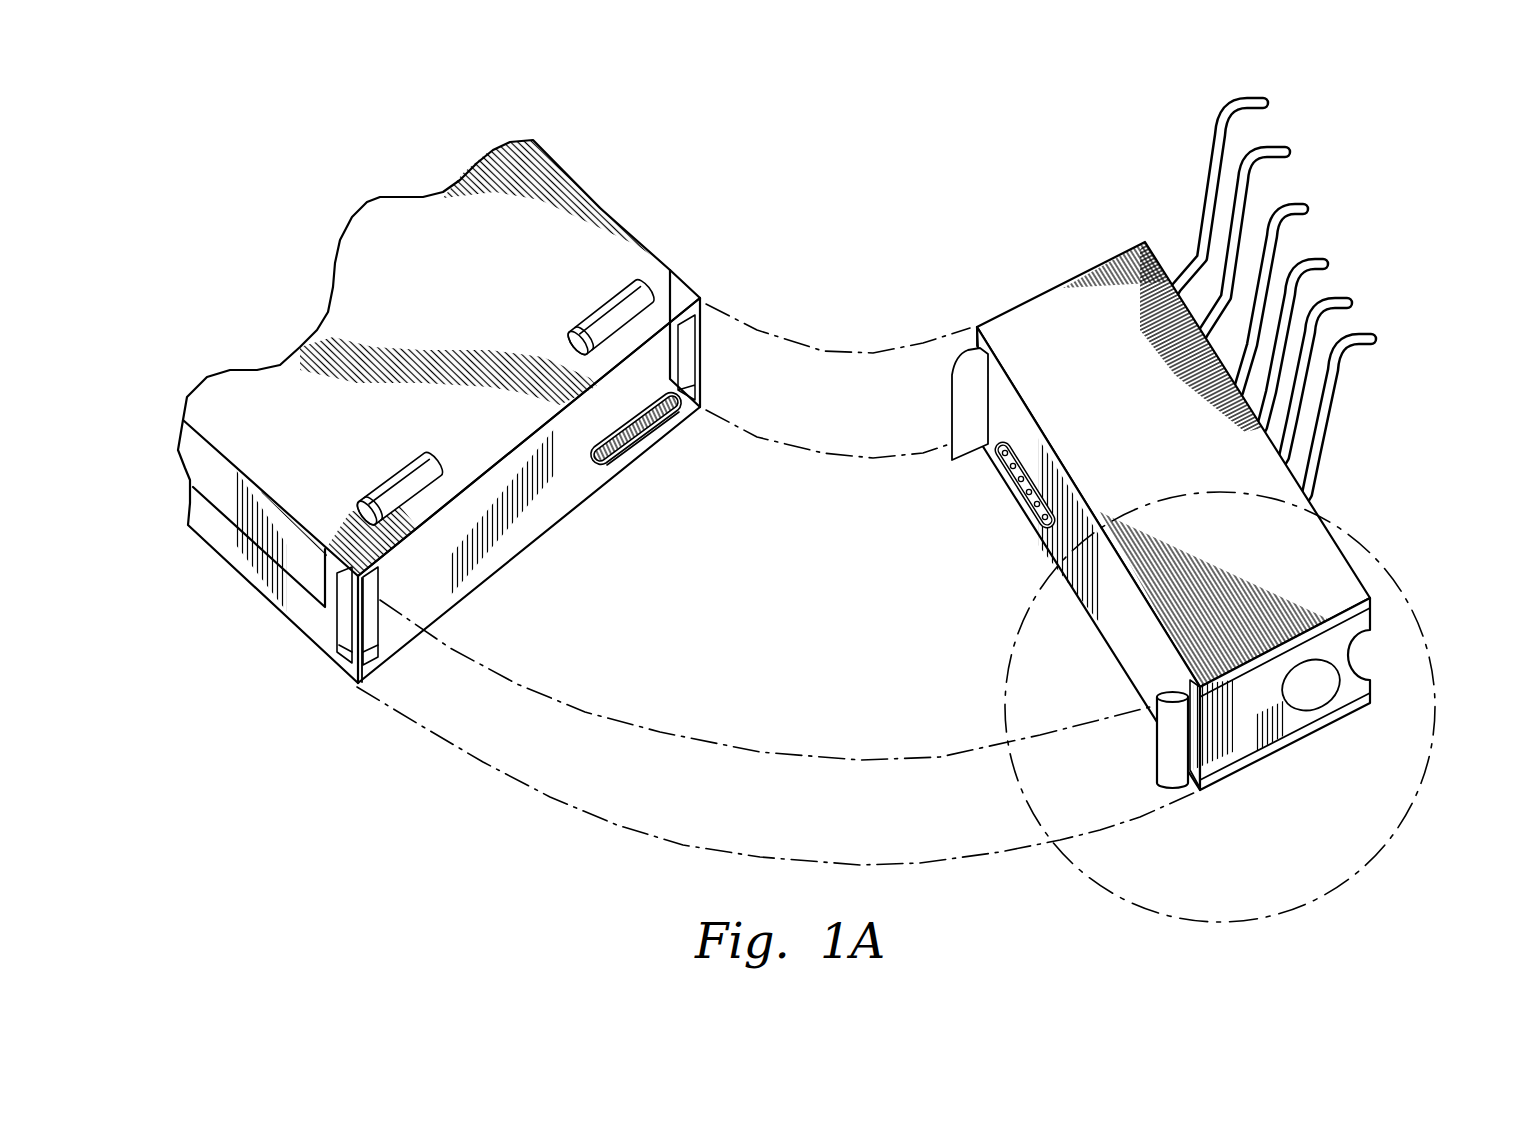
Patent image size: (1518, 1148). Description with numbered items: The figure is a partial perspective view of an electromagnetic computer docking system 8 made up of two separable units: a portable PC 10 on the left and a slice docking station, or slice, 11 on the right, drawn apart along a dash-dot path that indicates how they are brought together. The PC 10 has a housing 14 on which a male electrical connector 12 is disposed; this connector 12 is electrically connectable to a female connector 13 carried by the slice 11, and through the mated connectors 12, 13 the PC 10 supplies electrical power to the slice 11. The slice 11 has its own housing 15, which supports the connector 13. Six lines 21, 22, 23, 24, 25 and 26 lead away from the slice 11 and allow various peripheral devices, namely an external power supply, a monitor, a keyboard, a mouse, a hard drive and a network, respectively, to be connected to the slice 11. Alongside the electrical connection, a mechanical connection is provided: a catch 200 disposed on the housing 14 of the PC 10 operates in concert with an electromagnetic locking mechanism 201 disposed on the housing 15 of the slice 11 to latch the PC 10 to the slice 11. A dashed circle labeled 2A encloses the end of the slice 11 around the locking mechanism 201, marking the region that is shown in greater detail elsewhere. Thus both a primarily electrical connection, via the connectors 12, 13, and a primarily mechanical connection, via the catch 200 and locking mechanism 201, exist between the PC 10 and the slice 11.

The electromagnetic computer docking system 8 is at (402, 808).
The portable PC 10 is at (458, 411).
The slice docking station 11 is at (1161, 498).
The male electrical connector 12 is at (650, 440).
The female connector 13 is at (1012, 483).
The housing 14 is at (547, 517).
The housing 15 is at (1125, 660).
The catch 200 is at (348, 634).
The electromagnetic locking mechanism 201 is at (1240, 748).
The detail region shown in FIG. 2A is at (1405, 613).
The line 21 is at (1264, 108).
The line 22 is at (1286, 158).
The line 23 is at (1305, 215).
The line 24 is at (1325, 270).
The line 25 is at (1349, 309).
The line 26 is at (1372, 345).